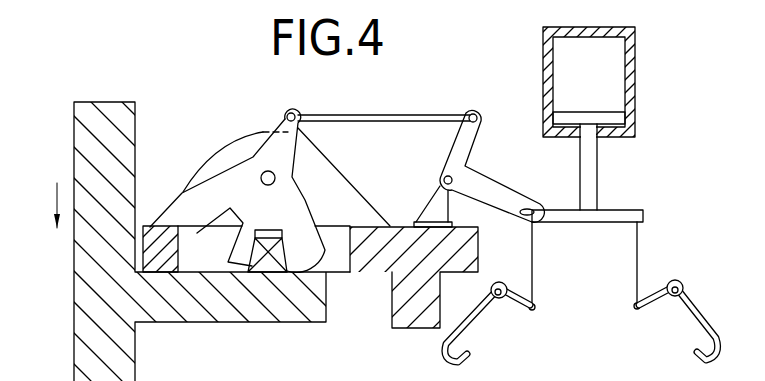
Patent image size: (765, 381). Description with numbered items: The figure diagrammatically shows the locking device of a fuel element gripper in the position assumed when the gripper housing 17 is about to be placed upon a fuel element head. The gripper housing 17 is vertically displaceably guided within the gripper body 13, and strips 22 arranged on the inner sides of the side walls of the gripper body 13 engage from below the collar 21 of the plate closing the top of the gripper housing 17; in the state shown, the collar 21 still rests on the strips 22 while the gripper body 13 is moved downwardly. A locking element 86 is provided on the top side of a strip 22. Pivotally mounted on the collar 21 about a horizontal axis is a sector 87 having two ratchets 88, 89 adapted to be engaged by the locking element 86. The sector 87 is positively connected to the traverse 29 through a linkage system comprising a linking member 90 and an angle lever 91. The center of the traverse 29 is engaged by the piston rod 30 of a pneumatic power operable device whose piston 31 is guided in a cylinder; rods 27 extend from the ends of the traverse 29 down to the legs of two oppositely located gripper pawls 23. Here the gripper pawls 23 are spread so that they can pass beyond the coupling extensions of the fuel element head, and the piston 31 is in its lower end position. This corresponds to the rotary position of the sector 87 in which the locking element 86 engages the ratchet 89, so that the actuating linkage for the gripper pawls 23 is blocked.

The gripper body 13 is at (82, 122).
The gripper housing 17 is at (403, 303).
The collar 21 is at (155, 226).
The strips 22 is at (196, 318).
The gripper pawls 23 is at (472, 318).
The rods 27 is at (534, 277).
The traverse 29 is at (607, 216).
The piston rod 30 is at (598, 170).
The piston 31 is at (592, 112).
The locking element 86 is at (270, 274).
The sector 87 is at (297, 203).
The ratchet 88 is at (226, 230).
The ratchet 89 is at (268, 230).
The linking member 90 is at (425, 116).
The angle lever 91 is at (502, 192).